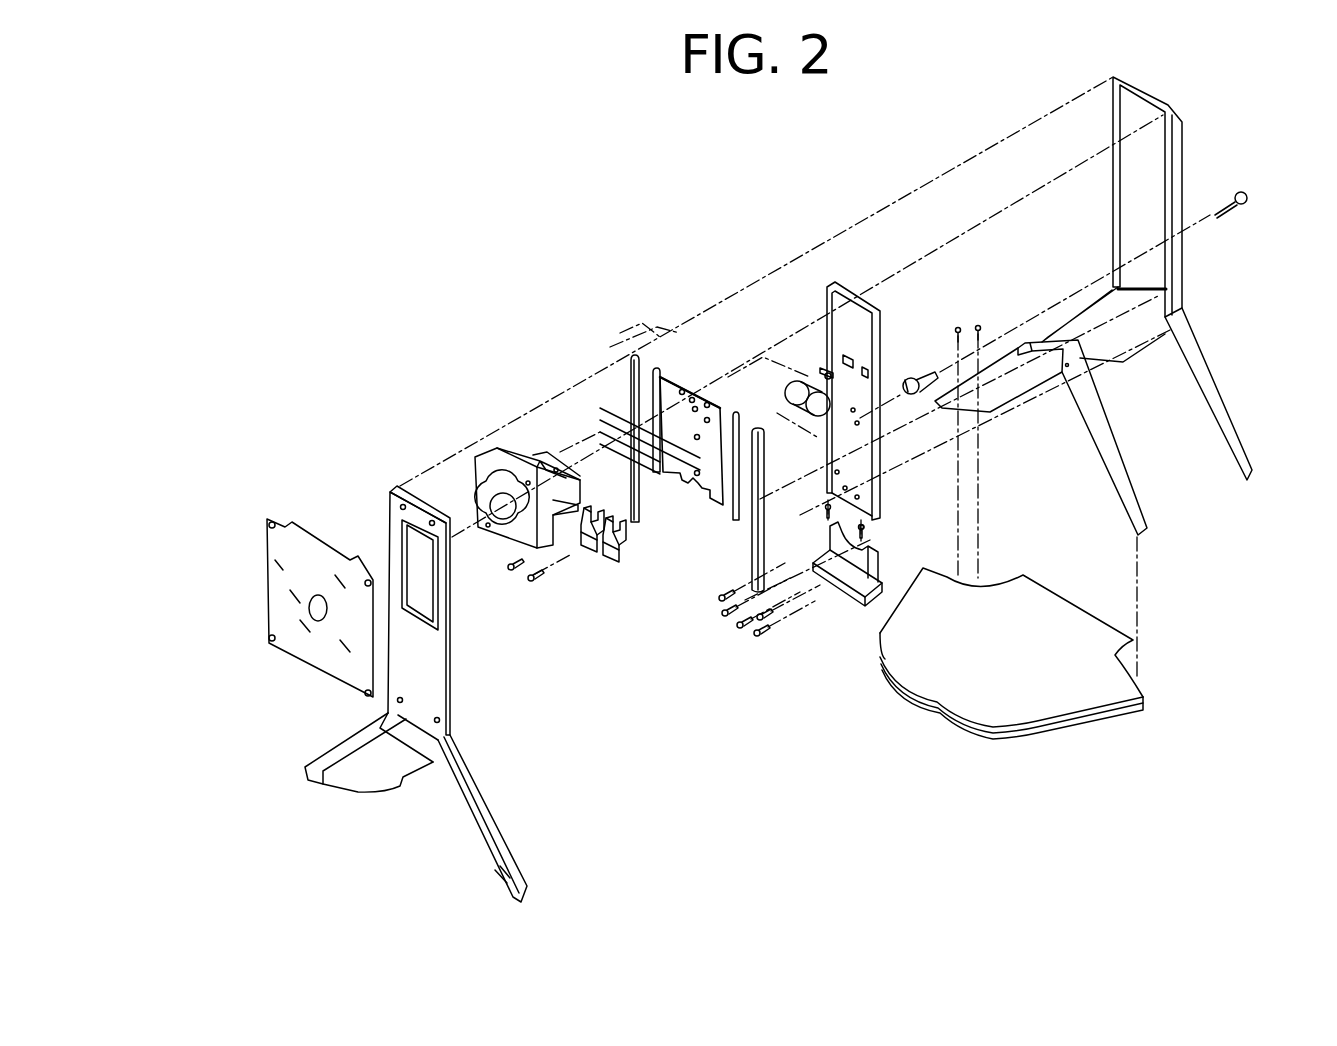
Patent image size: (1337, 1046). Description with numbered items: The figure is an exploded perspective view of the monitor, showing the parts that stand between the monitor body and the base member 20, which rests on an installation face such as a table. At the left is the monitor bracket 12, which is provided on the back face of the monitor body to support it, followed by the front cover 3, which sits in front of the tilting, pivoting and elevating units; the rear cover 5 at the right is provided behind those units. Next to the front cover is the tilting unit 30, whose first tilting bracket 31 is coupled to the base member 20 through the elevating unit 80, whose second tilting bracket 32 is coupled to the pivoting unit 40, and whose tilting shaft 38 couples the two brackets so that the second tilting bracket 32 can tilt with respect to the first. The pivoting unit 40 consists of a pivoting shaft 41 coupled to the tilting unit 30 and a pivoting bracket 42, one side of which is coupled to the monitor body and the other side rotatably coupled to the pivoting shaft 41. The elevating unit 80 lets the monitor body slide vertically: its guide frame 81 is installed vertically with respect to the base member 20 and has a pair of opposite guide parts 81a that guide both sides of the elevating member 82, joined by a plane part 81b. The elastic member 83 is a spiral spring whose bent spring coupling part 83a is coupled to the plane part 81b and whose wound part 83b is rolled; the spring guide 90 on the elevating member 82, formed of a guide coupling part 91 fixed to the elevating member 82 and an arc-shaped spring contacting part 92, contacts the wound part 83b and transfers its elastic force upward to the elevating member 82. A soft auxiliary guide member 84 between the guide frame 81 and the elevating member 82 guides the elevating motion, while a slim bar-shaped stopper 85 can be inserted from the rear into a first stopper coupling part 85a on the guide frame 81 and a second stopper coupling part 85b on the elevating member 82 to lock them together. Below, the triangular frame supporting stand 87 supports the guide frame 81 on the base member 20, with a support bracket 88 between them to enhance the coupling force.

The monitor bracket 12 is at (266, 575).
The front cover 3 is at (450, 697).
The tilting unit 30 is at (509, 439).
The first tilting bracket 31 is at (528, 463).
The second tilting bracket 32 is at (490, 449).
The tilting shaft 38 is at (540, 470).
The pivoting unit 40 is at (510, 605).
The pivoting shaft 41 is at (502, 547).
The pivoting bracket 42 is at (520, 552).
The spring guide 90 is at (616, 566).
The guide coupling part 91 is at (628, 543).
The spring contacting part 92 is at (613, 551).
The elevating unit 80 is at (748, 348).
The guide frame 81 is at (831, 348).
The guide parts 81a is at (868, 307).
The plane part 81b is at (838, 373).
The elevating member 82 is at (672, 380).
The elastic member 83 is at (746, 369).
The spring coupling part 83a is at (807, 383).
The wound part 83b is at (820, 388).
The auxiliary guide member 84 is at (757, 563).
The stopper 85 is at (1244, 195).
The first stopper coupling part 85a is at (867, 423).
The second stopper coupling part 85b is at (697, 440).
The support bracket 88 is at (860, 597).
The rear cover 5 is at (1225, 407).
The frame supporting stand 87 is at (1140, 492).
The base member 20 is at (1157, 673).